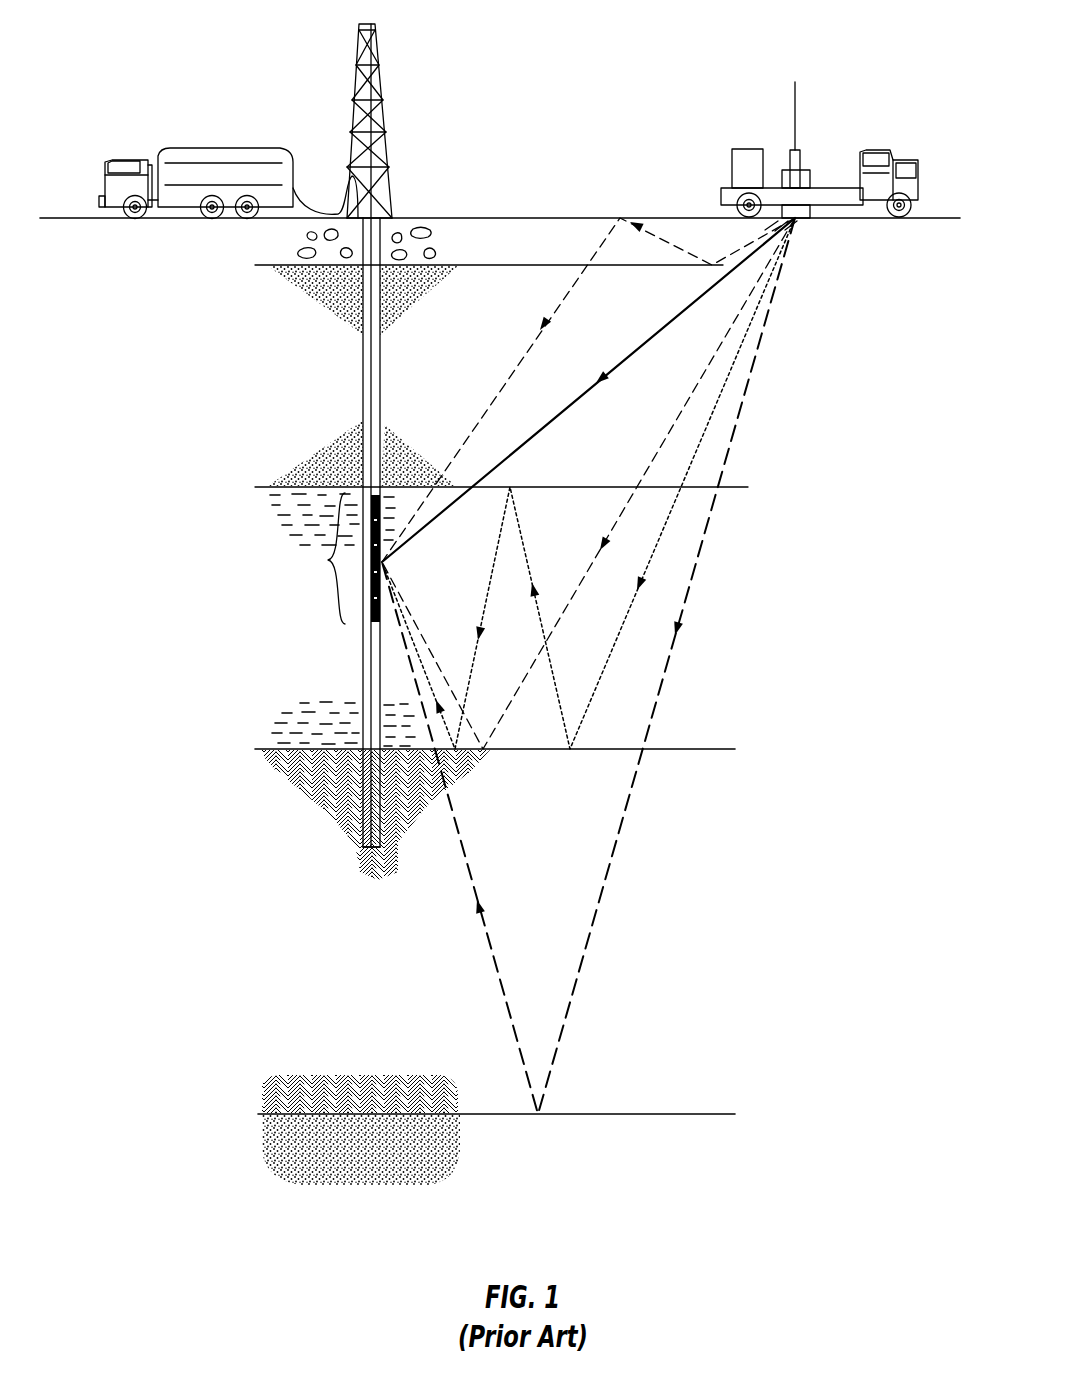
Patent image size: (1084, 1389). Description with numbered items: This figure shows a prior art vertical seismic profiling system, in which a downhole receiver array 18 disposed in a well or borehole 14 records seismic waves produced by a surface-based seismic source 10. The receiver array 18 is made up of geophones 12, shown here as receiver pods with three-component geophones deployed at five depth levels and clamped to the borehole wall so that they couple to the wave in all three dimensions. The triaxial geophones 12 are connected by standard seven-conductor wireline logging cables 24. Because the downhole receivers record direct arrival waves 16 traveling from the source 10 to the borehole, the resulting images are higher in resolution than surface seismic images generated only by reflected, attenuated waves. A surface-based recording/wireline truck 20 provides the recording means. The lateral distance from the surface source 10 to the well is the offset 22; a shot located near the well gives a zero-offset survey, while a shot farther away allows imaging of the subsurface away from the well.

The surface seismic source 10 is at (828, 190).
The geophones 12 is at (372, 616).
The borehole 14 is at (370, 843).
The direct arrival waves 16 is at (660, 330).
The downhole receiver array 18 is at (321, 558).
The recording/wireline truck 20 is at (216, 150).
The offset 22 is at (795, 115).
The wireline logging cables 24 is at (372, 360).